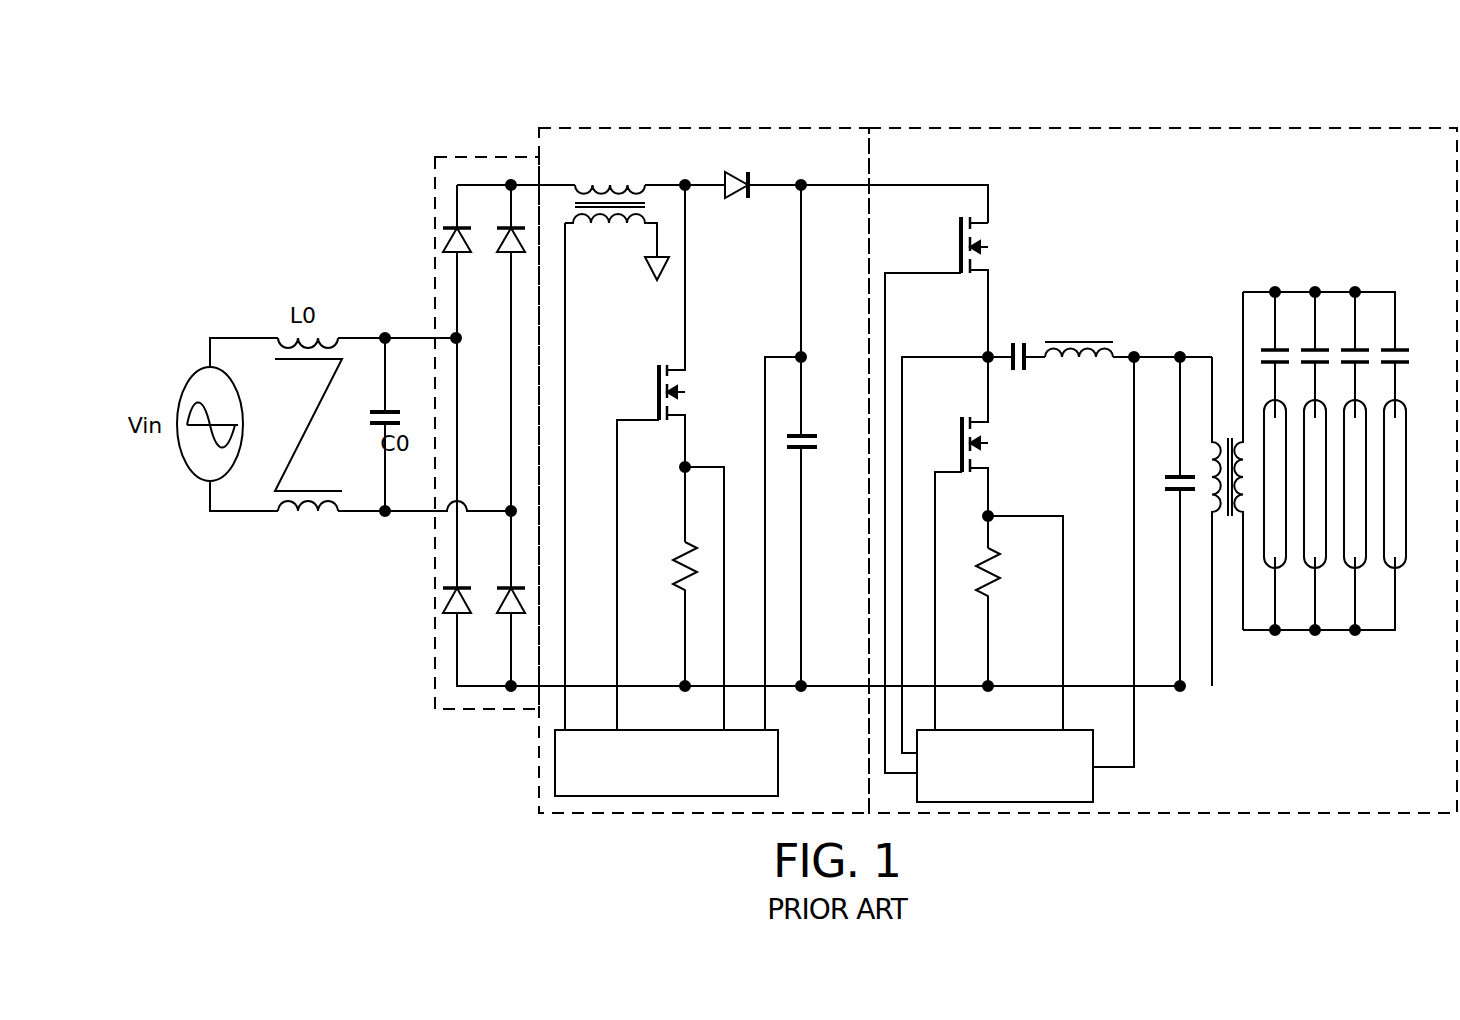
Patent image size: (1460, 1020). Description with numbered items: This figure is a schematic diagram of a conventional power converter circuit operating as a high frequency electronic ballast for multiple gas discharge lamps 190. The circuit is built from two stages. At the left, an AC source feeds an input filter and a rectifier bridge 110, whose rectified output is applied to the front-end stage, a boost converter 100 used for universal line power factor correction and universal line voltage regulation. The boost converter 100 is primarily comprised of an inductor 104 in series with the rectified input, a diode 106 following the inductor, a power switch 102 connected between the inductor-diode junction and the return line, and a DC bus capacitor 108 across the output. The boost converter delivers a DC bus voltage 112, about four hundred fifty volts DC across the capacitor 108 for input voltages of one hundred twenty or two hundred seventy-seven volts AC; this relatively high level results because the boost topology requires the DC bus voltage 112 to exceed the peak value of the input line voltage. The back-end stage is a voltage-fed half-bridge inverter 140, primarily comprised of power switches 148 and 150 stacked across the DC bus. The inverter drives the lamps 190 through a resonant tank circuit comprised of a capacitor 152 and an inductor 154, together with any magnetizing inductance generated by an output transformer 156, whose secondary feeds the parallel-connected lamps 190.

The boost converter 100 is at (797, 128).
The full-wave rectifier bridge 110 is at (483, 157).
The half-bridge inverter 140 is at (1330, 128).
The inductor 104 is at (638, 185).
The diode 106 is at (735, 200).
The DC bus voltage 112 is at (805, 190).
The power switch 102 is at (688, 392).
The DC bus capacitor 108 is at (815, 430).
The power switch 148 is at (990, 250).
The power switch 150 is at (990, 450).
The inductor 154 is at (1100, 342).
The capacitor 152 is at (1172, 495).
The output transformer 156 is at (1228, 507).
The gas discharge lamps 190 is at (1283, 572).